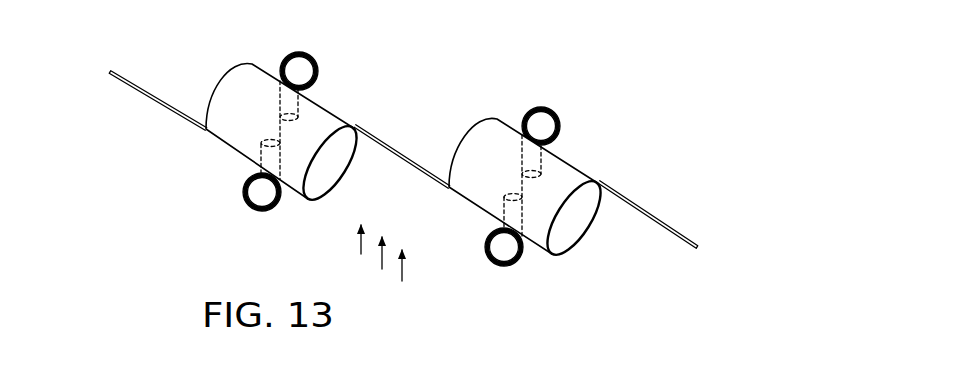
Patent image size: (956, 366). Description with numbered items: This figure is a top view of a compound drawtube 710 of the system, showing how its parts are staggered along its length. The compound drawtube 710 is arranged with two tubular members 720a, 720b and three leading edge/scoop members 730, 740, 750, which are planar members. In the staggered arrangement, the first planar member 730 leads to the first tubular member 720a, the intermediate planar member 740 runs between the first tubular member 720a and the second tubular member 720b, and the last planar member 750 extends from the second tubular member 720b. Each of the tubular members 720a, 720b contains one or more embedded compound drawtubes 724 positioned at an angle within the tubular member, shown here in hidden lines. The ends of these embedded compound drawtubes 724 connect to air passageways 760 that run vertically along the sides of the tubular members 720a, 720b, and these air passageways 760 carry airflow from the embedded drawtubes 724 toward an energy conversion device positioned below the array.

The compound drawtube 710 is at (690, 148).
The tubular member 720a is at (320, 98).
The tubular member 720b is at (537, 257).
The embedded compound drawtube 724 is at (265, 132).
The leading edge/scoop member 730 is at (128, 82).
The leading edge/scoop member 740 is at (380, 138).
The leading edge/scoop member 750 is at (678, 232).
The air passageway 760 is at (307, 55).